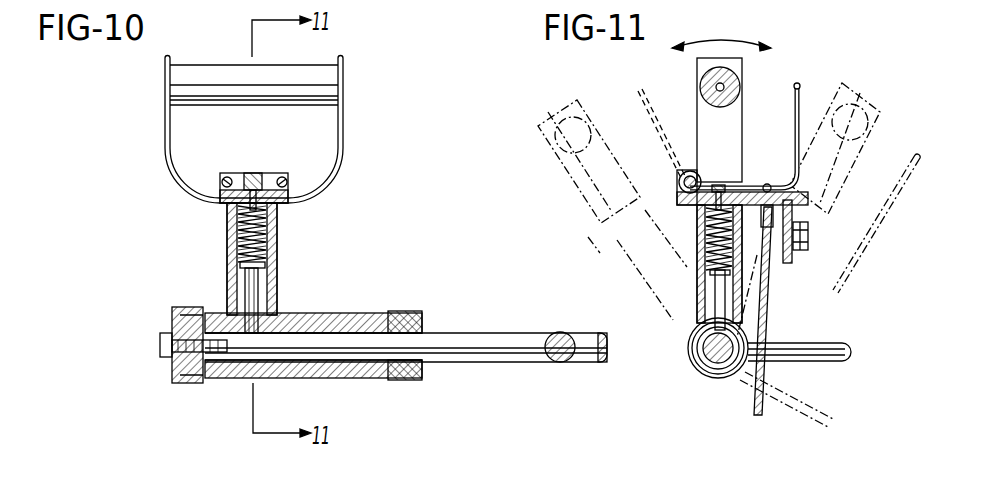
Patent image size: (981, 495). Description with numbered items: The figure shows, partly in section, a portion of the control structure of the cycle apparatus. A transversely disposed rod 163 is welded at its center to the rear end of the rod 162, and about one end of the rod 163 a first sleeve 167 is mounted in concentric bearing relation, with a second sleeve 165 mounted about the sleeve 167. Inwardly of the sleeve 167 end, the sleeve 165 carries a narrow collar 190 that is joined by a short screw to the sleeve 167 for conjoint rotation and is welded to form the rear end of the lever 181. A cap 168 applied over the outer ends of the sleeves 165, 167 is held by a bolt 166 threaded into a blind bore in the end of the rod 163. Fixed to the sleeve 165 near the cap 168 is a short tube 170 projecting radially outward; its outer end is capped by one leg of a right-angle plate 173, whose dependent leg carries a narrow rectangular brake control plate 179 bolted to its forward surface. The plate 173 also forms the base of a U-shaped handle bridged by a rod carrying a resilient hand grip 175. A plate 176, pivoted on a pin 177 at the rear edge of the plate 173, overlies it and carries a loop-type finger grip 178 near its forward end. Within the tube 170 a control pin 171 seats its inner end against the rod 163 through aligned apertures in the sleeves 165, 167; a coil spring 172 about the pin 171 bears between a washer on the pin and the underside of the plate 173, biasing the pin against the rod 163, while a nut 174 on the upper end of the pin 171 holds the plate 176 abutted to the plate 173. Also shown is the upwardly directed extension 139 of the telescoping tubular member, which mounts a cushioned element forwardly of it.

In FIG. 11, the extension 139 is at (762, 415).
In FIG. 10, the rod 162 is at (560, 332).
In FIG. 10, the transversely disposed rod 163 is at (510, 338).
In FIG. 11, the transversely disposed rod 163 is at (705, 365).
In FIG. 10, the second sleeve 165 is at (340, 372).
In FIG. 11, the second sleeve 165 is at (697, 355).
In FIG. 10, the bolt 166 is at (162, 347).
In FIG. 10, the first sleeve 167 is at (340, 325).
In FIG. 11, the first sleeve 167 is at (718, 378).
In FIG. 10, the cap 168 is at (177, 307).
In FIG. 10, the short tube 170 is at (278, 253).
In FIG. 11, the short tube 170 is at (697, 300).
In FIG. 10, the control pin 171 is at (245, 282).
In FIG. 11, the control pin 171 is at (715, 310).
In FIG. 10, the coil spring 172 is at (237, 235).
In FIG. 11, the coil spring 172 is at (705, 245).
In FIG. 10, the plate 173 is at (220, 197).
In FIG. 11, the plate 173 is at (808, 202).
In FIG. 10, the nut 174 is at (260, 173).
In FIG. 11, the nut 174 is at (718, 184).
In FIG. 10, the hand grip 175 is at (213, 93).
In FIG. 11, the hand grip 175 is at (700, 71).
In FIG. 11, the plate 176 is at (757, 195).
In FIG. 11, the pin 177 is at (680, 176).
In FIG. 11, the finger grip 178 is at (799, 84).
In FIG. 11, the brake control plate 179 is at (796, 262).
In FIG. 11, the lever 181 is at (833, 362).
In FIG. 10, the collar 190 is at (395, 311).
In FIG. 11, the collar 190 is at (733, 378).